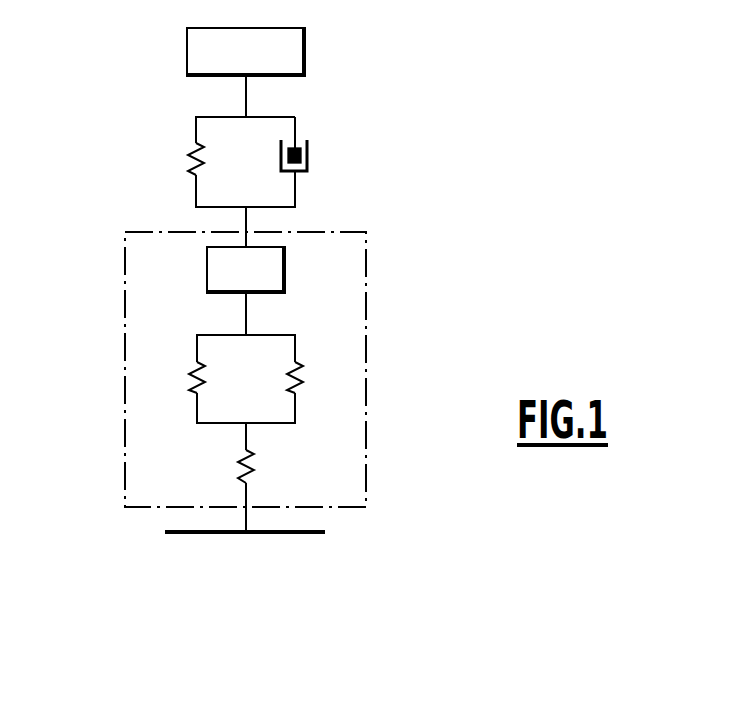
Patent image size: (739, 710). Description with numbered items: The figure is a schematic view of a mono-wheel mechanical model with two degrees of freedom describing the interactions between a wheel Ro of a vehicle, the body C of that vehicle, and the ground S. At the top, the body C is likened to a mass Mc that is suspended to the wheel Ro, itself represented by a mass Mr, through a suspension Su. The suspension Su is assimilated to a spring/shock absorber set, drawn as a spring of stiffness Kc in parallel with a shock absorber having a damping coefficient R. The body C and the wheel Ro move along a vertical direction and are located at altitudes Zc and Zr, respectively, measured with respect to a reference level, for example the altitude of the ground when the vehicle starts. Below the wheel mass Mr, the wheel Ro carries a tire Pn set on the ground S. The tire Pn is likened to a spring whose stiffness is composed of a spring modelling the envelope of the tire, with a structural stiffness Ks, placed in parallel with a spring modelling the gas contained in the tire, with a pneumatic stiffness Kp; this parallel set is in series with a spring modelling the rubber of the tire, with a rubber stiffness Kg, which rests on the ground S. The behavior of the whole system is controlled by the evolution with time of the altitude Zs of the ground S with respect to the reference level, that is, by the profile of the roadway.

The body C is at (187, 51).
The mass Mc is at (246, 52).
The altitude Zc is at (307, 52).
The suspension Su is at (245, 182).
The stiffness Kc is at (212, 160).
The damping coefficient R is at (310, 162).
The wheel Ro is at (125, 331).
The mass Mr is at (246, 270).
The altitude Zr is at (287, 269).
The tire Pn is at (244, 343).
The structural stiffness Ks is at (214, 378).
The pneumatic stiffness Kp is at (313, 378).
The rubber stiffness Kg is at (264, 467).
The ground S is at (177, 537).
The altitude Zs is at (327, 532).